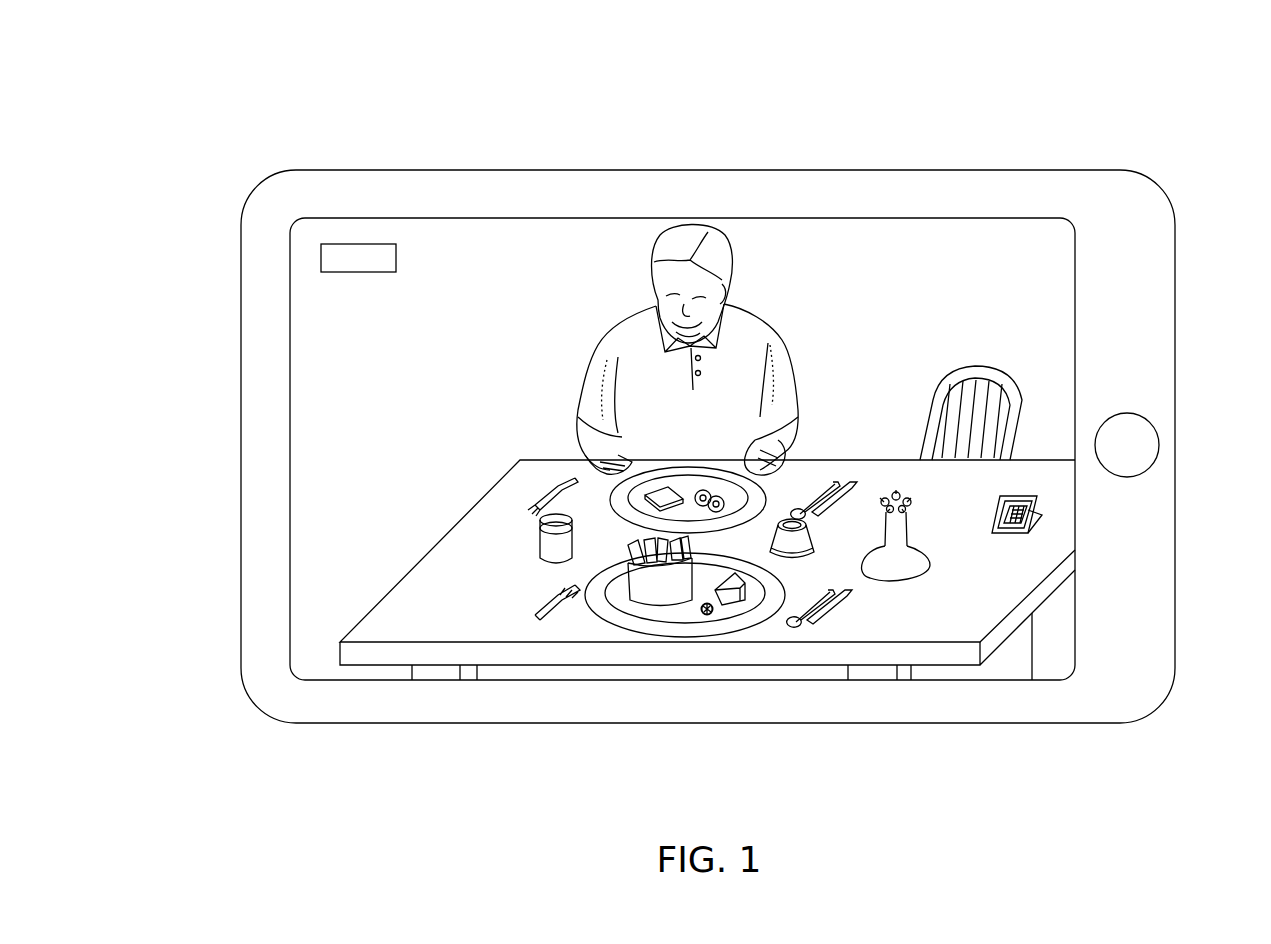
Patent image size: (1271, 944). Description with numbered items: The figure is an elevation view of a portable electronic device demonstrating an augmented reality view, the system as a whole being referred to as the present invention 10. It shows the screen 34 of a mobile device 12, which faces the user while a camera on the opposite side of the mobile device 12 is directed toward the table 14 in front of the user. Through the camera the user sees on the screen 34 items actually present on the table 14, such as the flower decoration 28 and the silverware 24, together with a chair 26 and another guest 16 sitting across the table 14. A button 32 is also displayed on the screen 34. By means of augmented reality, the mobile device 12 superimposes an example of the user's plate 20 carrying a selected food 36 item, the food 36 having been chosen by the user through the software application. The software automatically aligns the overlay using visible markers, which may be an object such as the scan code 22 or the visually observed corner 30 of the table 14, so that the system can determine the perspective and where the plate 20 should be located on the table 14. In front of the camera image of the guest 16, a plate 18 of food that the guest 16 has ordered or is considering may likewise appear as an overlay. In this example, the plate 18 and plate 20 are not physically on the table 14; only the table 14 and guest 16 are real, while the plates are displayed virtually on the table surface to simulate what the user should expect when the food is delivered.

The present invention 10 is at (245, 106).
The mobile device 12 is at (241, 431).
The table 14 is at (388, 623).
The guest 16 is at (775, 338).
The plate 18 is at (612, 498).
The plate 20 is at (685, 661).
The scan code 22 is at (1042, 516).
The silverware 24 is at (822, 621).
The chair 26 is at (985, 368).
The decoration 28 is at (898, 558).
The corner 30 is at (520, 460).
The button 32 is at (357, 244).
The screen 34 is at (926, 257).
The food 36 is at (662, 592).